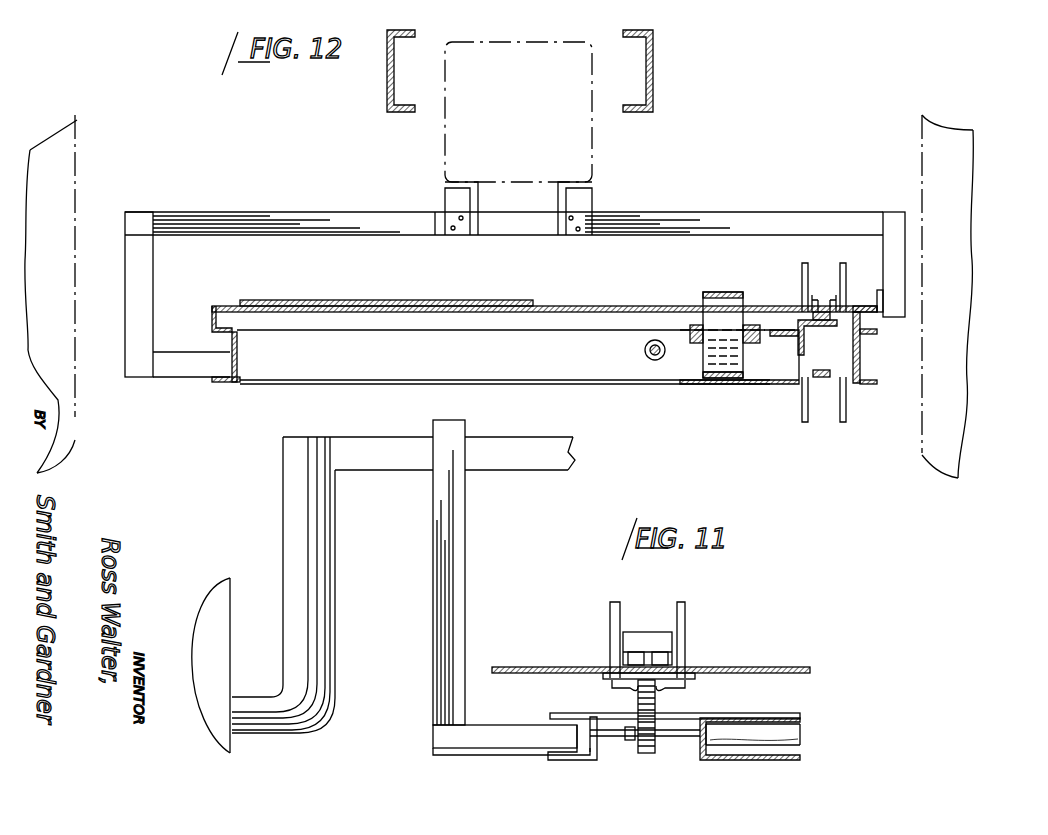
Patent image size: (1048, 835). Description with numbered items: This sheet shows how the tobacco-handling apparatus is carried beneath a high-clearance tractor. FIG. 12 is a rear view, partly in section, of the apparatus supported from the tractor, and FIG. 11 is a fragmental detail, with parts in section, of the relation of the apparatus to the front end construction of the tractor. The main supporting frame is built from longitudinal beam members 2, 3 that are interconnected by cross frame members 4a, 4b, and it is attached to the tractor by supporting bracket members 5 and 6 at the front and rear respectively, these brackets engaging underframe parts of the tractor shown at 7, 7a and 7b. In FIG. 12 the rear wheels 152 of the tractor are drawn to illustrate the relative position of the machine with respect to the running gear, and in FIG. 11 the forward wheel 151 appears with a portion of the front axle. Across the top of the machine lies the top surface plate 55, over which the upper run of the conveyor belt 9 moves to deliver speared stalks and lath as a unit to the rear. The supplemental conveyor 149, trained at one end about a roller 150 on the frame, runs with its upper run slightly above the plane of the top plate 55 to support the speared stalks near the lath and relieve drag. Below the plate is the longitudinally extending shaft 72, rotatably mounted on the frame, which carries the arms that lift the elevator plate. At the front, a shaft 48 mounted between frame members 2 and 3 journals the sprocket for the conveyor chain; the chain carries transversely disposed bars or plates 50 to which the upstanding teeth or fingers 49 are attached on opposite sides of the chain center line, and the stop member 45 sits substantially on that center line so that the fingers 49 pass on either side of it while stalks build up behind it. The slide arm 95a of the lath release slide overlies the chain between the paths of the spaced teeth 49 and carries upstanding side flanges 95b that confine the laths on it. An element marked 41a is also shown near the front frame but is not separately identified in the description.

In FIG. 12, the longitudinal beam member 2 is at (782, 384).
In FIG. 11, the longitudinal beam member 2 is at (738, 718).
In FIG. 12, the longitudinal beam member 3 is at (864, 382).
In FIG. 11, the longitudinal beam member 3 is at (553, 714).
In FIG. 12, the cross frame member 4a is at (535, 378).
In FIG. 12, the cross frame member 4b is at (826, 327).
In FIG. 11, the cross frame member 4b is at (790, 728).
In FIG. 11, the supporting bracket member 5 is at (432, 567).
In FIG. 12, the supporting bracket member 6 is at (148, 303).
In FIG. 12, the tractor underframe part 7 is at (394, 447).
In FIG. 12, the tractor underframe part 7a is at (558, 203).
In FIG. 12, the tractor underframe part 7b is at (387, 78).
In FIG. 12, the conveyor belt 9 is at (360, 299).
In FIG. 11, the bar 41a is at (636, 706).
In FIG. 11, the stop member 45 is at (650, 629).
In FIG. 11, the shaft 48 is at (670, 736).
In FIG. 12, the upstanding teeth or fingers 49 is at (840, 268).
In FIG. 11, the upstanding teeth or fingers 49 is at (676, 596).
In FIG. 11, the transversely disposed bars or plates 50 is at (700, 686).
In FIG. 12, the top surface plate 55 is at (584, 305).
In FIG. 11, the top surface plate 55 is at (763, 666).
In FIG. 12, the longitudinally extending shaft 72 is at (644, 350).
In FIG. 11, the slide arm 95a is at (660, 660).
In FIG. 11, the upstanding side flanges 95b is at (628, 660).
In FIG. 12, the supplemental conveyor 149 is at (718, 292).
In FIG. 12, the roller 150 is at (703, 372).
In FIG. 12, the forward wheel 151 is at (229, 591).
In FIG. 12, the rear wheels 152 is at (78, 160).